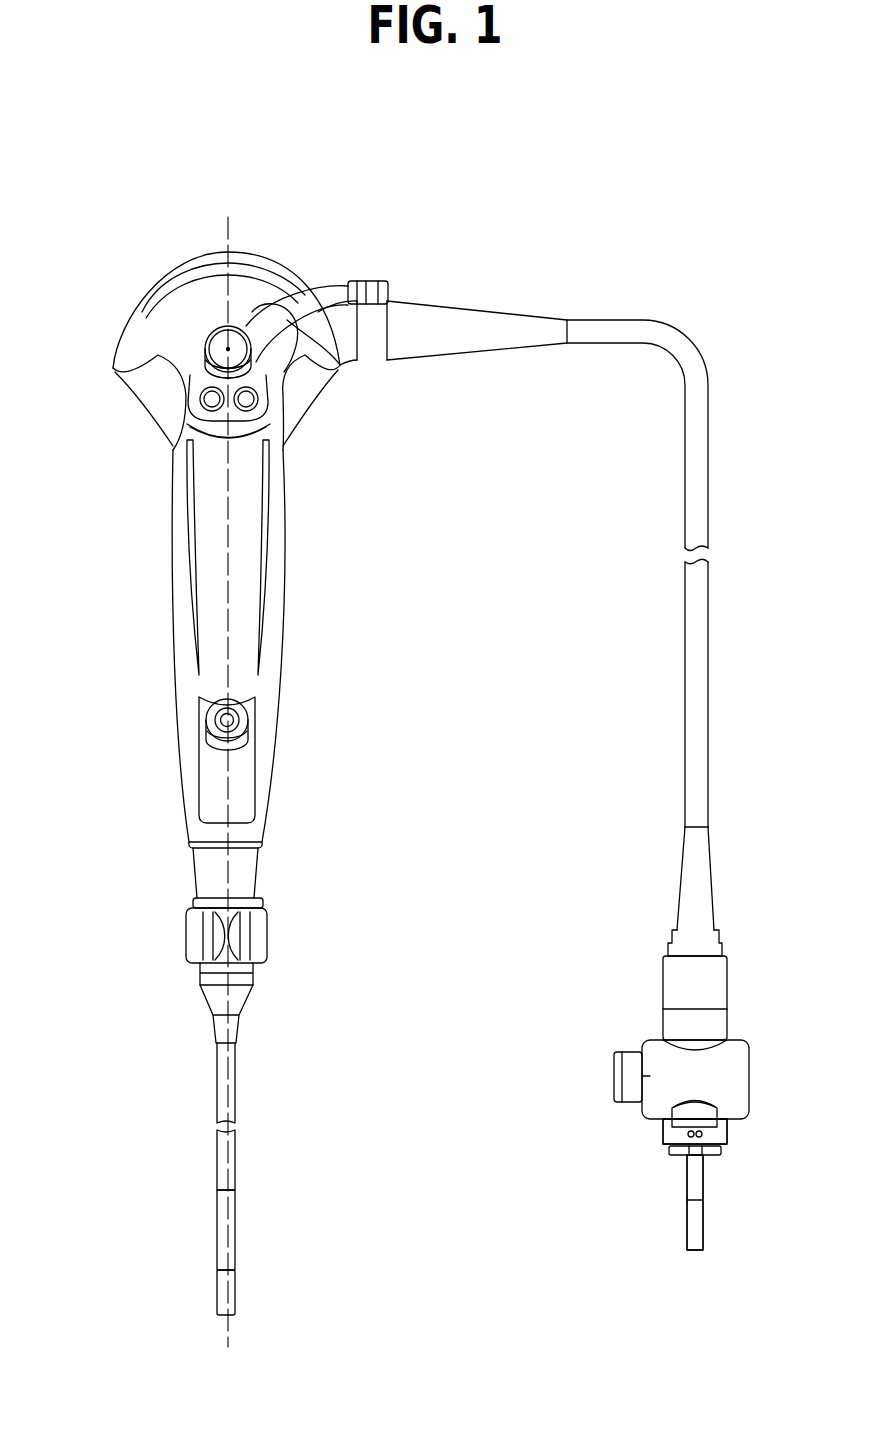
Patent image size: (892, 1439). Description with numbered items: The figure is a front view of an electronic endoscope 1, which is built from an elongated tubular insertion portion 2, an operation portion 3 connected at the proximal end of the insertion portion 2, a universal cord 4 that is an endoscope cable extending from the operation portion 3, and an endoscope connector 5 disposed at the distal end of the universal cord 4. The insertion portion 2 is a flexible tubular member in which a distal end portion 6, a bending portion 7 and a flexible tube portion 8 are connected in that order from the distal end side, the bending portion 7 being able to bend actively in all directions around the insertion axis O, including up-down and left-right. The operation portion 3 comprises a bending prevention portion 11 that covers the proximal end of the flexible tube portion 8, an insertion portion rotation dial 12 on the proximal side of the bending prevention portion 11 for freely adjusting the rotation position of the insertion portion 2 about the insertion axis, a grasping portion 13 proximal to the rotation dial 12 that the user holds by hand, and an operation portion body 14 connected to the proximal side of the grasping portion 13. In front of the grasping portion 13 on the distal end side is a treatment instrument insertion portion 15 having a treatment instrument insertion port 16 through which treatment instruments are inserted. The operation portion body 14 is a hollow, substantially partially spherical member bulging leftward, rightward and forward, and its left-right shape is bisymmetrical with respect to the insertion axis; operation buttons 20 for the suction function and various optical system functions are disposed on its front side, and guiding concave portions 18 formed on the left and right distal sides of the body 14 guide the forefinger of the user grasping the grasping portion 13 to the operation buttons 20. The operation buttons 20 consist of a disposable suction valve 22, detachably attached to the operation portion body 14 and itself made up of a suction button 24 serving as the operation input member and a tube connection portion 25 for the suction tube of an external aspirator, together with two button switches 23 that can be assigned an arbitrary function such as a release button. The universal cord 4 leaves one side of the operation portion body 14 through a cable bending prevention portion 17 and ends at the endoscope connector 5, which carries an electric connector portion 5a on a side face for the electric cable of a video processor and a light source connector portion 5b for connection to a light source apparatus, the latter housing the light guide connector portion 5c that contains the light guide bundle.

The endoscope 1 is at (123, 189).
The insertion portion 2 is at (290, 1143).
The operation portion 3 is at (333, 527).
The universal cord 4 is at (609, 319).
The endoscope connector 5 is at (649, 1013).
The electric connector portion 5a is at (618, 1052).
The light source connector portion 5b is at (654, 1127).
The light guide connector portion 5c is at (704, 1215).
The distal end portion 6 is at (237, 1290).
The bending portion 7 is at (237, 1225).
The flexible tube portion 8 is at (237, 1157).
The bending prevention portion 11 is at (240, 1030).
The insertion portion rotation dial 12 is at (267, 930).
The grasping portion 13 is at (282, 600).
The operation portion body 14 is at (133, 317).
The treatment instrument insertion portion 15 is at (255, 768).
The treatment instrument insertion port 16 is at (250, 720).
The cable bending prevention portion 17 is at (467, 301).
The guiding concave portions 18 is at (150, 388).
The operation buttons 20 is at (320, 219).
The suction valve 22 is at (239, 318).
The button switches 23 is at (205, 388).
The suction button 24 is at (226, 326).
The tube connection portion 25 is at (345, 283).